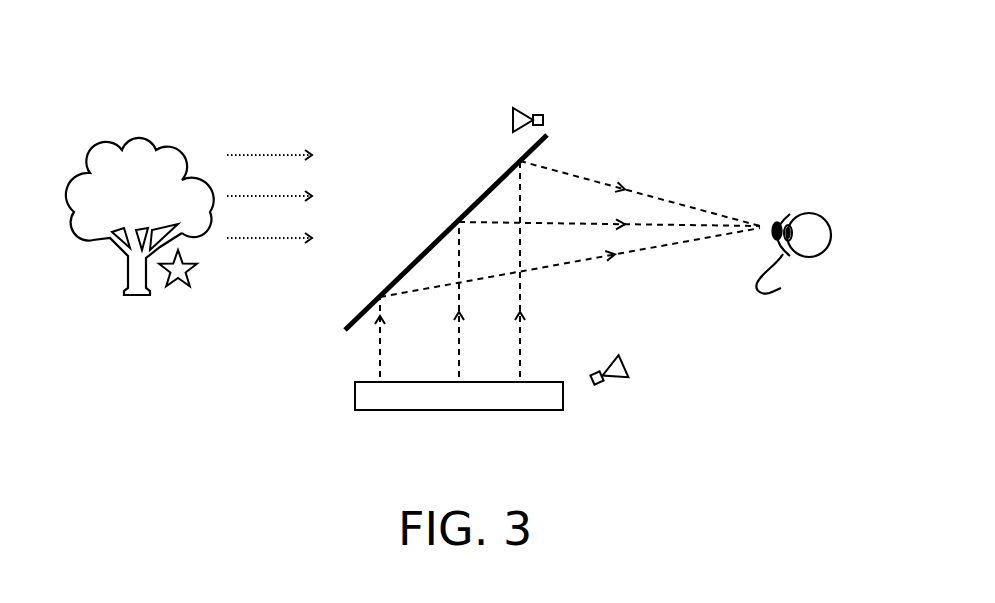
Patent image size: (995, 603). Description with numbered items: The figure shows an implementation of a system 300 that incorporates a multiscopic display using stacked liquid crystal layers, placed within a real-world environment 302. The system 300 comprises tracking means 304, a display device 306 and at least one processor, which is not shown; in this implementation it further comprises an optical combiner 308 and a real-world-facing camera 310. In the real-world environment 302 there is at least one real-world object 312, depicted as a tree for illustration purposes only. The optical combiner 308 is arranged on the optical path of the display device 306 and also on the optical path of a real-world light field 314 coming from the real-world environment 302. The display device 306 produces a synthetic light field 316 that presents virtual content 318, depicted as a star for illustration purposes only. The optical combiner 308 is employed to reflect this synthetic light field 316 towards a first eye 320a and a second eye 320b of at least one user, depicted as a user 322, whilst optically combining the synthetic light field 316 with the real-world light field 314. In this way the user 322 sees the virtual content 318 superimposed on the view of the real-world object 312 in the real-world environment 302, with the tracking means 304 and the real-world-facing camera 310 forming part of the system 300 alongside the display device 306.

The system 300 is at (362, 132).
The real-world environment 302 is at (125, 200).
The tracking means 304 is at (632, 400).
The display device 306 is at (406, 289).
The optical combiner 308 is at (446, 232).
The real-world-facing camera 310 is at (550, 88).
The real-world object 312 is at (125, 220).
The real-world light field 314 is at (288, 232).
The synthetic light field 316 is at (570, 204).
The virtual content 318 is at (174, 311).
The first eye 320a is at (781, 197).
The second eye 320b is at (824, 271).
The user 322 is at (820, 234).